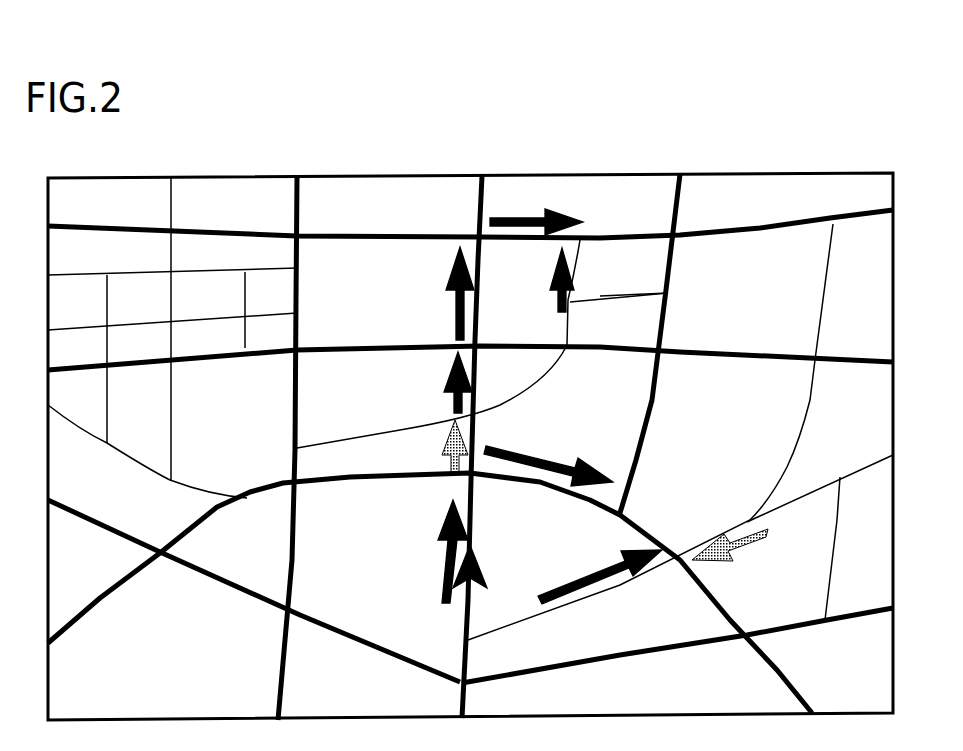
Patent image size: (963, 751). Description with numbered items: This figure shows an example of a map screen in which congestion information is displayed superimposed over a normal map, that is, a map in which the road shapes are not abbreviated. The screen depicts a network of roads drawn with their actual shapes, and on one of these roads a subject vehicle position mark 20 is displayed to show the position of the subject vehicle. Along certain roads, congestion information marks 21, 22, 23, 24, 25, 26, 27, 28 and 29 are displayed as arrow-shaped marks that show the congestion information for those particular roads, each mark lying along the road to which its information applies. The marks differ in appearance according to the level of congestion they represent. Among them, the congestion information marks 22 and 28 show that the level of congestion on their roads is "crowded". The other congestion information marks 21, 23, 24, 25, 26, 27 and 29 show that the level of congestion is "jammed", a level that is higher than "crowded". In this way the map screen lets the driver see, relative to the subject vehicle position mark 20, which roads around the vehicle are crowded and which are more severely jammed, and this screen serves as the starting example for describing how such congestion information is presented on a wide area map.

The subject vehicle position mark 20 is at (483, 570).
The congestion information mark 21 is at (436, 535).
The congestion information mark 22 is at (440, 437).
The congestion information mark 23 is at (443, 372).
The congestion information mark 24 is at (448, 281).
The congestion information mark 25 is at (557, 212).
The congestion information mark 26 is at (593, 468).
The congestion information mark 27 is at (620, 560).
The congestion information mark 28 is at (733, 560).
The congestion information mark 29 is at (540, 279).